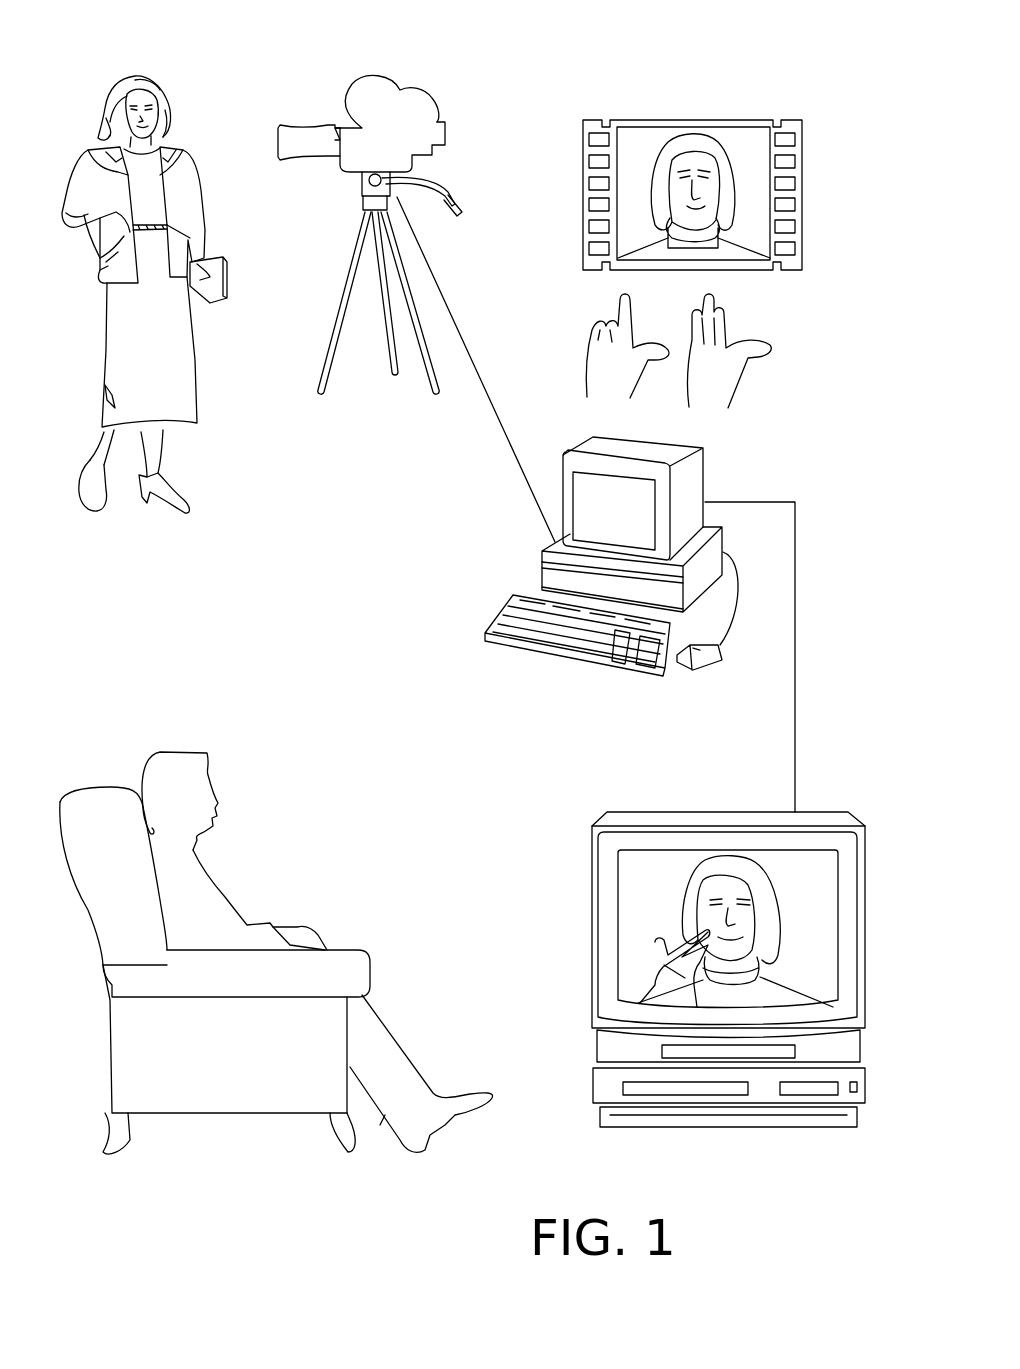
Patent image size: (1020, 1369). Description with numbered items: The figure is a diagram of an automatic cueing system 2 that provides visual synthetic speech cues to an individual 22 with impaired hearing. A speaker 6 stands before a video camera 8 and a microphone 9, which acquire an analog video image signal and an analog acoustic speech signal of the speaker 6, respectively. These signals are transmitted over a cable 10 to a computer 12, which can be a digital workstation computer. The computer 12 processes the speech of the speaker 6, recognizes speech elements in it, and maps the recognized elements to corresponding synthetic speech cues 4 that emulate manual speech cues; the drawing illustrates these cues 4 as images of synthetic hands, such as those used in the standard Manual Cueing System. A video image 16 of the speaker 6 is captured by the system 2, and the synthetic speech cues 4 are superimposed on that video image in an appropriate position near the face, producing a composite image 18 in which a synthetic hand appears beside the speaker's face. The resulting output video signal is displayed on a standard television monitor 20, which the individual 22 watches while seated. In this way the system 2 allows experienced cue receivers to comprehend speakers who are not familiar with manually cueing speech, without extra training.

The automatic cueing system 2 is at (297, 1202).
The synthetic speech cues 4 is at (745, 334).
The speaker 6 is at (190, 163).
The video camera 8 is at (350, 80).
The microphone 9 is at (394, 80).
The cable 10 is at (461, 327).
The computer 12 is at (706, 478).
The video image of speaker 16 is at (678, 115).
The displayed image 18 is at (665, 927).
The television monitor 20 is at (706, 812).
The individual 22 is at (215, 884).